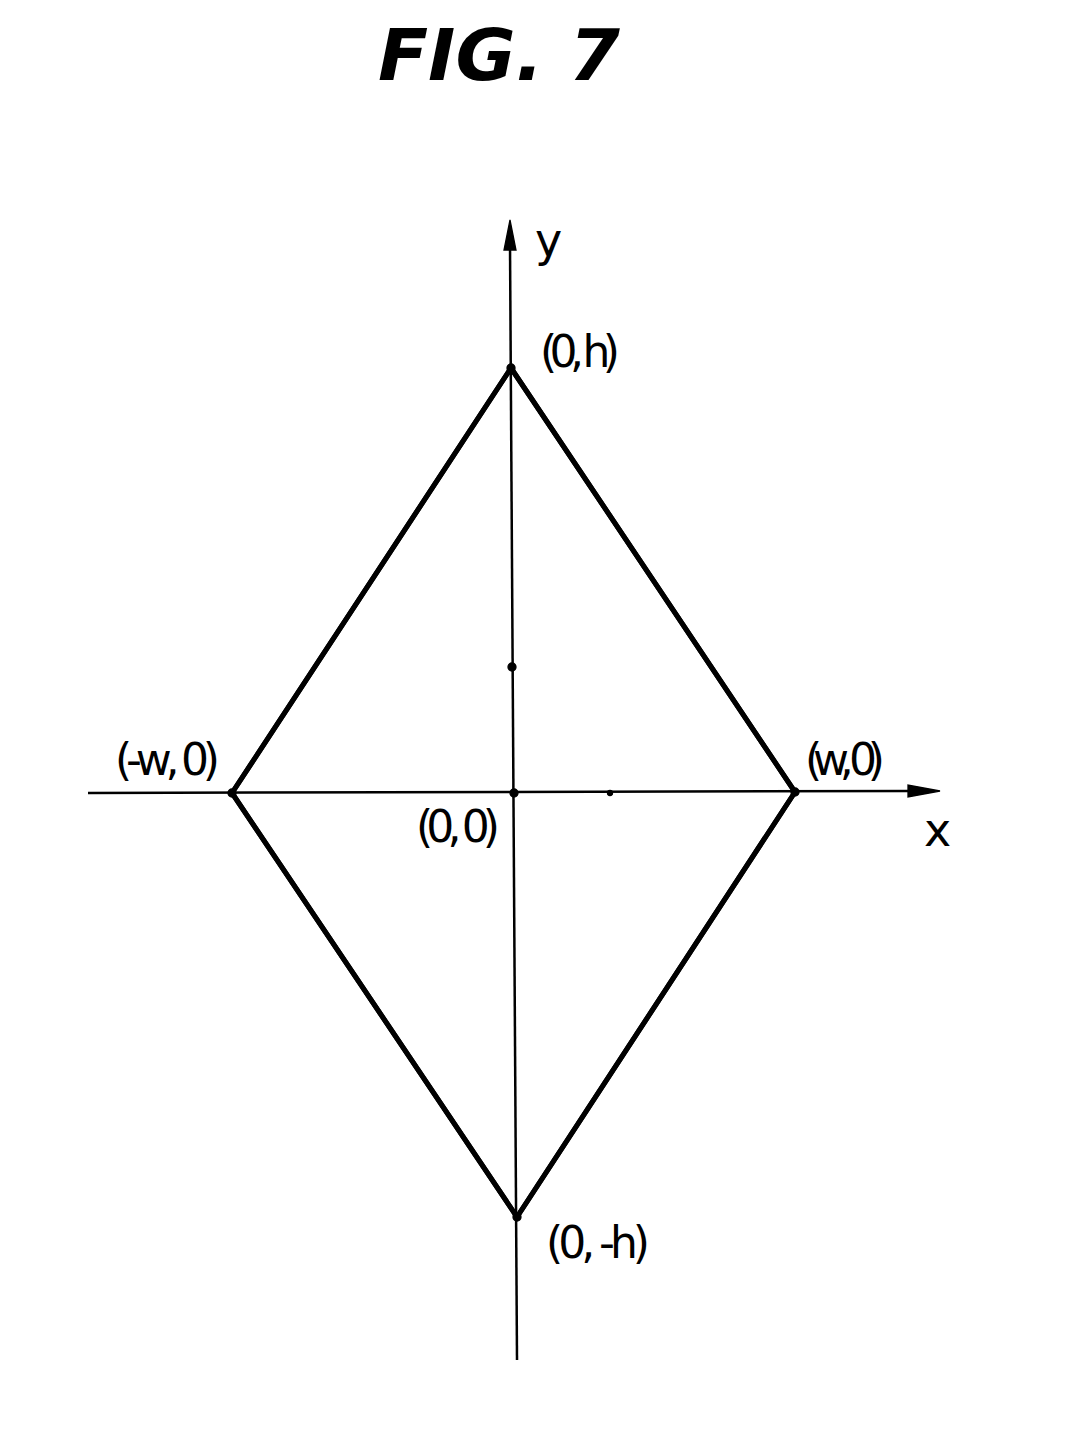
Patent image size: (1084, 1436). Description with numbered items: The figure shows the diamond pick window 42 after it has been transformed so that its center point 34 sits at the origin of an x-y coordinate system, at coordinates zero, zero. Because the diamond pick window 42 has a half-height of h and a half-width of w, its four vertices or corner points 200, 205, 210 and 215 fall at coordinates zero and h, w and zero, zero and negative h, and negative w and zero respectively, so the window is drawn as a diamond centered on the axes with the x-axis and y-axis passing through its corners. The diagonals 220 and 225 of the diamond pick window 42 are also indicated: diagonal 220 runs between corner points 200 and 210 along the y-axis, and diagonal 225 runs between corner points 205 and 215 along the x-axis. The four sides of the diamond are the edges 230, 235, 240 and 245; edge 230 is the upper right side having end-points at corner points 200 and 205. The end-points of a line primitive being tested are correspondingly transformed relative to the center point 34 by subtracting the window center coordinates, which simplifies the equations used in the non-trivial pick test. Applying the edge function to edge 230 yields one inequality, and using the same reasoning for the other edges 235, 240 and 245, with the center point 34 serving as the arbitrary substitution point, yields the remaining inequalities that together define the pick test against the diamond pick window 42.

The diamond pick window 42 is at (412, 600).
The center point 34 is at (515, 793).
The corner point 200 is at (511, 368).
The corner point 205 is at (797, 794).
The corner point 210 is at (517, 1219).
The corner point 215 is at (232, 794).
The diagonal 220 is at (514, 667).
The diagonal 225 is at (610, 794).
The edge 230 is at (707, 652).
The edge 235 is at (313, 663).
The edge 240 is at (403, 1055).
The edge 245 is at (681, 969).